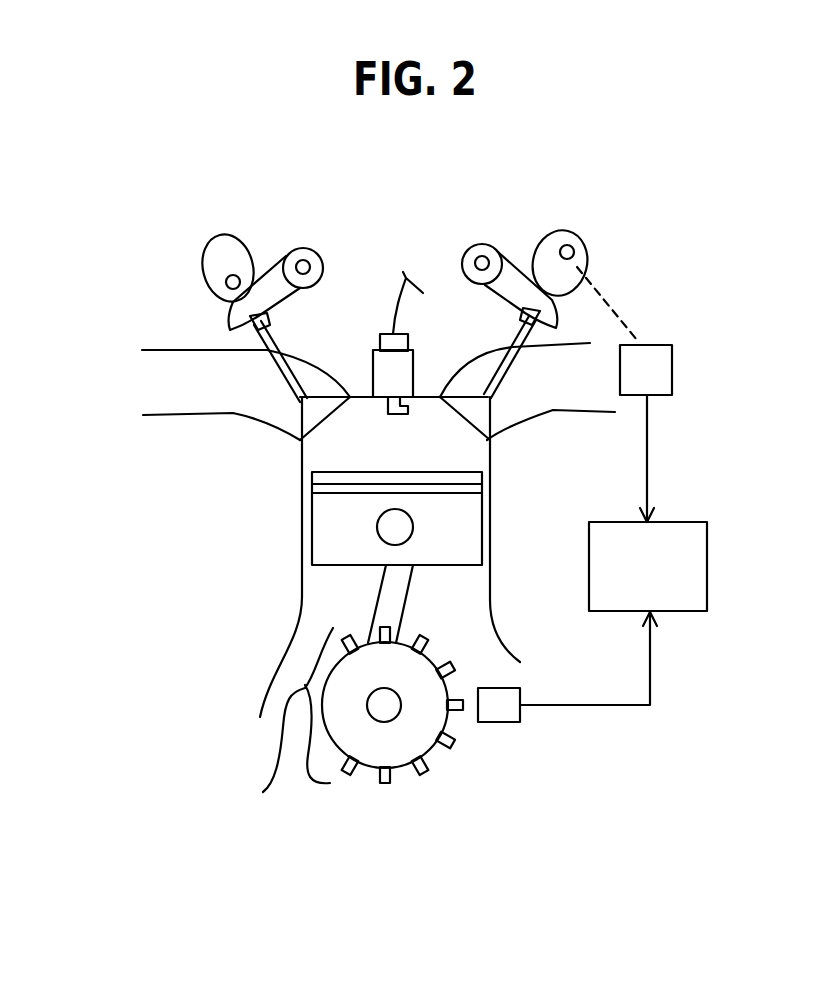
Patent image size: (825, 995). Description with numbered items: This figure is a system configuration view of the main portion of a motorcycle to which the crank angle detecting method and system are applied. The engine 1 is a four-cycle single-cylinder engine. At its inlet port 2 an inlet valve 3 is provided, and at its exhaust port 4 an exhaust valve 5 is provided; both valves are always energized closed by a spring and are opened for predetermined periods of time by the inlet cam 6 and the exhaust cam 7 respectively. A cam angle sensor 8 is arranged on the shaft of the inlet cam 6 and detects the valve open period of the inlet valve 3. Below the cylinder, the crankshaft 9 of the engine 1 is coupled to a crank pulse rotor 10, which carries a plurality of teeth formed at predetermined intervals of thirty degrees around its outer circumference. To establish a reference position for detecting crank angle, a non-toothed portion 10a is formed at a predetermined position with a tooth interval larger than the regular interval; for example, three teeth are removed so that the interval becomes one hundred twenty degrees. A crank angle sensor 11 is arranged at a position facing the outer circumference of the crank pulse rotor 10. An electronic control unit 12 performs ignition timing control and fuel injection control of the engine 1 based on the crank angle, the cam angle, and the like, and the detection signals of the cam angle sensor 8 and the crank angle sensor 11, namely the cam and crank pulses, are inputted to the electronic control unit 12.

The engine 1 is at (302, 576).
The inlet port 2 is at (233, 400).
The inlet valve 3 is at (325, 413).
The exhaust port 4 is at (547, 397).
The exhaust valve 5 is at (468, 410).
The inlet cam 6 is at (207, 262).
The exhaust cam 7 is at (585, 239).
The cam angle sensor 8 is at (673, 368).
The crankshaft 9 is at (384, 710).
The crank pulse rotor 10 is at (419, 803).
The non-toothed portion 10a is at (287, 725).
The crank angle sensor 11 is at (503, 722).
The electronic control unit (ECU) 12 is at (707, 567).